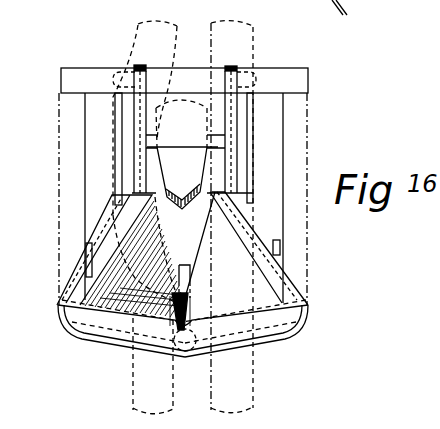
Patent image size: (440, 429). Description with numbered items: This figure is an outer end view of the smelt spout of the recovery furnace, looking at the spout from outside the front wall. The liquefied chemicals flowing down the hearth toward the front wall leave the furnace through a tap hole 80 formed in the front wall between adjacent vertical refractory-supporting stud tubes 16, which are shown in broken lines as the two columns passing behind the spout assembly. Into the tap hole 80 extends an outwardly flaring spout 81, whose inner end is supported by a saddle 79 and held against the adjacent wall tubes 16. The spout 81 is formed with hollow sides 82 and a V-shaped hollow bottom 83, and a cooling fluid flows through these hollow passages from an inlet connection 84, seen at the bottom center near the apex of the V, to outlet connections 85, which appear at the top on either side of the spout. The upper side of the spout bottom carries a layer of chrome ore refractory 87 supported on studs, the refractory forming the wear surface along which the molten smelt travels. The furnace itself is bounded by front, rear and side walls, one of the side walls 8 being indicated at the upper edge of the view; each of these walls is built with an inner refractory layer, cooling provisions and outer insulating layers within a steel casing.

The side wall 8 is at (103, 0).
The refractory-supporting stud tubes 16 is at (252, 402).
The saddle 79 is at (272, 227).
The tap hole 80 is at (185, 154).
The spout 81 is at (310, 306).
The hollow sides 82 is at (74, 292).
The V-shaped hollow bottom 83 is at (268, 347).
The inlet connection 84 is at (200, 353).
The outlet connections 85 is at (118, 72).
The chrome ore refractory 87 is at (122, 323).